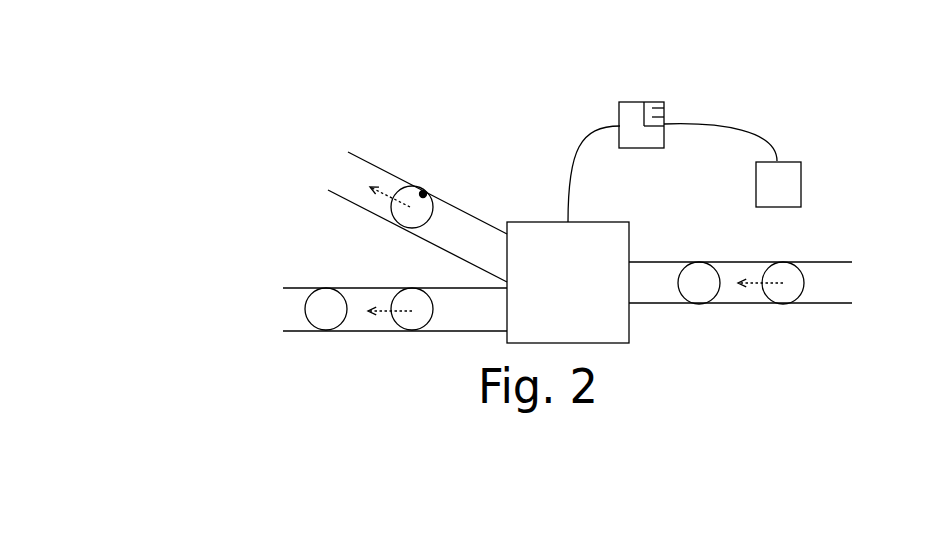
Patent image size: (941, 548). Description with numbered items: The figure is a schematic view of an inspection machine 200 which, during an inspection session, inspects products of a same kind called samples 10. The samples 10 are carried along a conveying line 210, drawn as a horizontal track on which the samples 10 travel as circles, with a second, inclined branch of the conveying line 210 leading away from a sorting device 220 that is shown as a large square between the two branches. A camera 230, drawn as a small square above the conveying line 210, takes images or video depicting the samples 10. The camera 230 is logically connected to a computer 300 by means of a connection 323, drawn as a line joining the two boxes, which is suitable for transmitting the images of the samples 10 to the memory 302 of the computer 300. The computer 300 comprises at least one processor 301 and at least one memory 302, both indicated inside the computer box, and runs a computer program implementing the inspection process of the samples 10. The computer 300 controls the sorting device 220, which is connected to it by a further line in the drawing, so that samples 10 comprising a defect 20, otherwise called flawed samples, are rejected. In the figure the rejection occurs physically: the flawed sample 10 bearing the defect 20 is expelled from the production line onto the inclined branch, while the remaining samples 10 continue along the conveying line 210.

The inspection machine 200 is at (294, 110).
The sample 10 is at (410, 200).
The defect 20 is at (423, 194).
The conveying line 210 is at (644, 290).
The sorting device 220 is at (568, 282).
The camera 230 is at (790, 177).
The computer 300 is at (628, 117).
The processor 301 is at (660, 108).
The memory 302 is at (661, 117).
The connection 323 is at (745, 131).